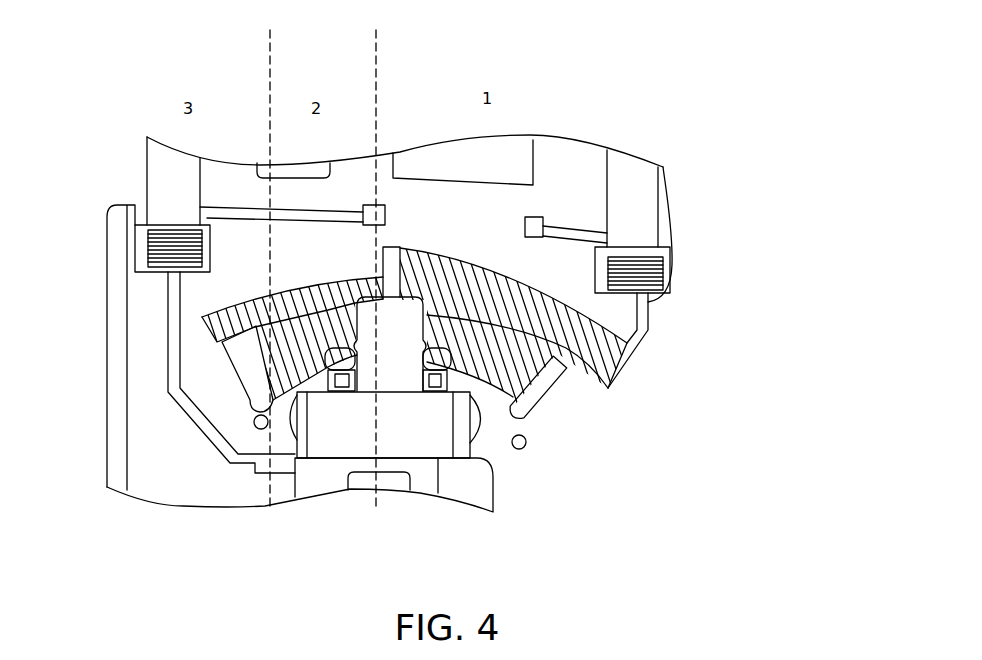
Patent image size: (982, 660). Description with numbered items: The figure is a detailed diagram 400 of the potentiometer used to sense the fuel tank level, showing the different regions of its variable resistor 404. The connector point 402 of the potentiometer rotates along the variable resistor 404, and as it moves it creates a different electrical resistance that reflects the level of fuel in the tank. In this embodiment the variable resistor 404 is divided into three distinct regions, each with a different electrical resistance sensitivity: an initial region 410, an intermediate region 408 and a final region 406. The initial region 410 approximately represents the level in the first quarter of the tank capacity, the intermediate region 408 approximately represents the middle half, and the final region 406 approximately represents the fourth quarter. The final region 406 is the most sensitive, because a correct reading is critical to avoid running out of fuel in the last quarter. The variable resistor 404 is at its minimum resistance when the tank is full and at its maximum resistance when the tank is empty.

The detailed diagram 400 is at (690, 113).
The connector point 402 is at (401, 310).
The variable resistor 404 is at (522, 388).
The final region 406 is at (431, 320).
The intermediate region 408 is at (296, 392).
The initial region 410 is at (247, 368).